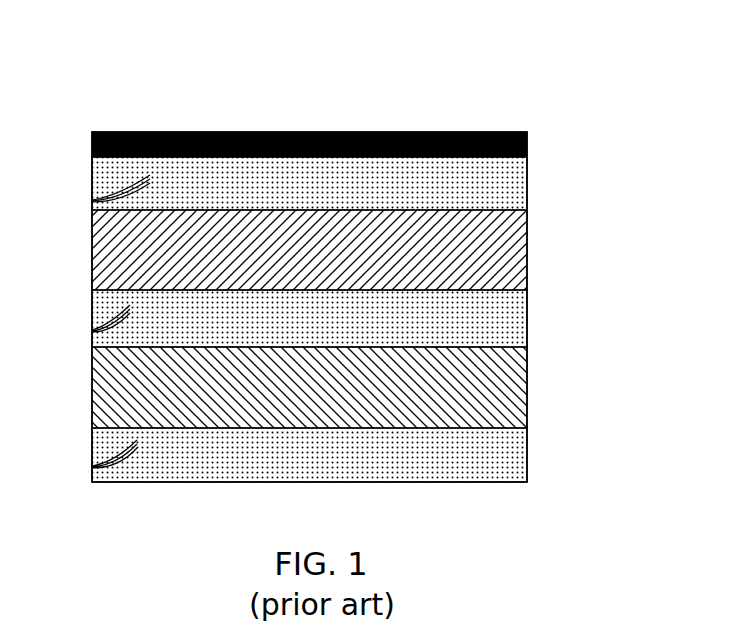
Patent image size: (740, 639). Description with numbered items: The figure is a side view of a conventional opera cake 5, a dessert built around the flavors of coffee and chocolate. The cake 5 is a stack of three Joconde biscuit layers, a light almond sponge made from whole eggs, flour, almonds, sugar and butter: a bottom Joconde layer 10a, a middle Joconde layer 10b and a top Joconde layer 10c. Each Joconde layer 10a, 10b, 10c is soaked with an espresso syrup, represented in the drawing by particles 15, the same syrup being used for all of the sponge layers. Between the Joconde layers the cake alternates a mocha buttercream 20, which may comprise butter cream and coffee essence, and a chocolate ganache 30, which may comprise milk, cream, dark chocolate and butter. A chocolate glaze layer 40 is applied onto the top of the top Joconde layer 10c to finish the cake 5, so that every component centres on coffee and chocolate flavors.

The conventional opera cake 5 is at (530, 84).
The chocolate glaze layer 40 is at (383, 132).
The top Joconde layer 10c is at (520, 172).
The chocolate ganache 30 is at (520, 228).
The middle Joconde layer 10b is at (518, 300).
The mocha buttercream 20 is at (518, 370).
The bottom Joconde layer 10a is at (518, 438).
The espresso syrup particles 15 is at (92, 201).